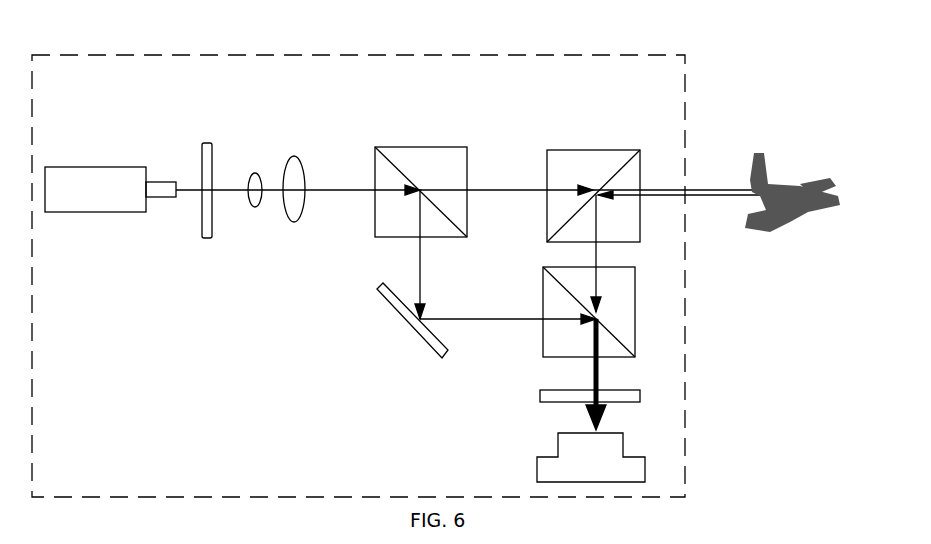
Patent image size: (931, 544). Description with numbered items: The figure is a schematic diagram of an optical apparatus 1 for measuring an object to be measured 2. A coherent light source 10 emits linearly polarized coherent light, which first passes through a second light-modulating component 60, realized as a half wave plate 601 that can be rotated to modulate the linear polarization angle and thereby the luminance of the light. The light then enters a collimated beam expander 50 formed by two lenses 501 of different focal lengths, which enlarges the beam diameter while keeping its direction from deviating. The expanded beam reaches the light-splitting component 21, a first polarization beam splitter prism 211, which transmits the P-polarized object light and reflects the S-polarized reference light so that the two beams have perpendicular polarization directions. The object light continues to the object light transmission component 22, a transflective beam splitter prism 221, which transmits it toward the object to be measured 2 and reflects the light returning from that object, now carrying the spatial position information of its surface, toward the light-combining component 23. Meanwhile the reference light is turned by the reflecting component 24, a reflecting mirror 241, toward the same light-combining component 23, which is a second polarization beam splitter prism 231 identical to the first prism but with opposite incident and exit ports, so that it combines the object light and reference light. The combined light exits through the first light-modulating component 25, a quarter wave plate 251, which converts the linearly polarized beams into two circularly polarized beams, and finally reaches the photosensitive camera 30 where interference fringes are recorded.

The optical apparatus 1 is at (258, 54).
The object to be measured 2 is at (765, 158).
The coherent light source 10 is at (95, 167).
The light-splitting component 21 is at (443, 148).
The first polarization beam splitter prism 211 is at (410, 147).
The object light transmission component 22 is at (611, 153).
The transflective beam splitter prism 221 is at (578, 150).
The light-combining component 23 is at (655, 298).
The second polarization beam splitter prism 231 is at (635, 310).
The reflecting component 24 is at (338, 301).
The reflecting mirror 241 is at (382, 288).
The first light-modulating component 25 is at (654, 351).
The quarter wave plate 251 is at (622, 390).
The photosensitive camera 30 is at (618, 433).
The collimated beam expander 50 is at (313, 141).
The lens 501 is at (378, 101).
The second light-modulating component 60 is at (162, 148).
The half wave plate 601 is at (207, 143).